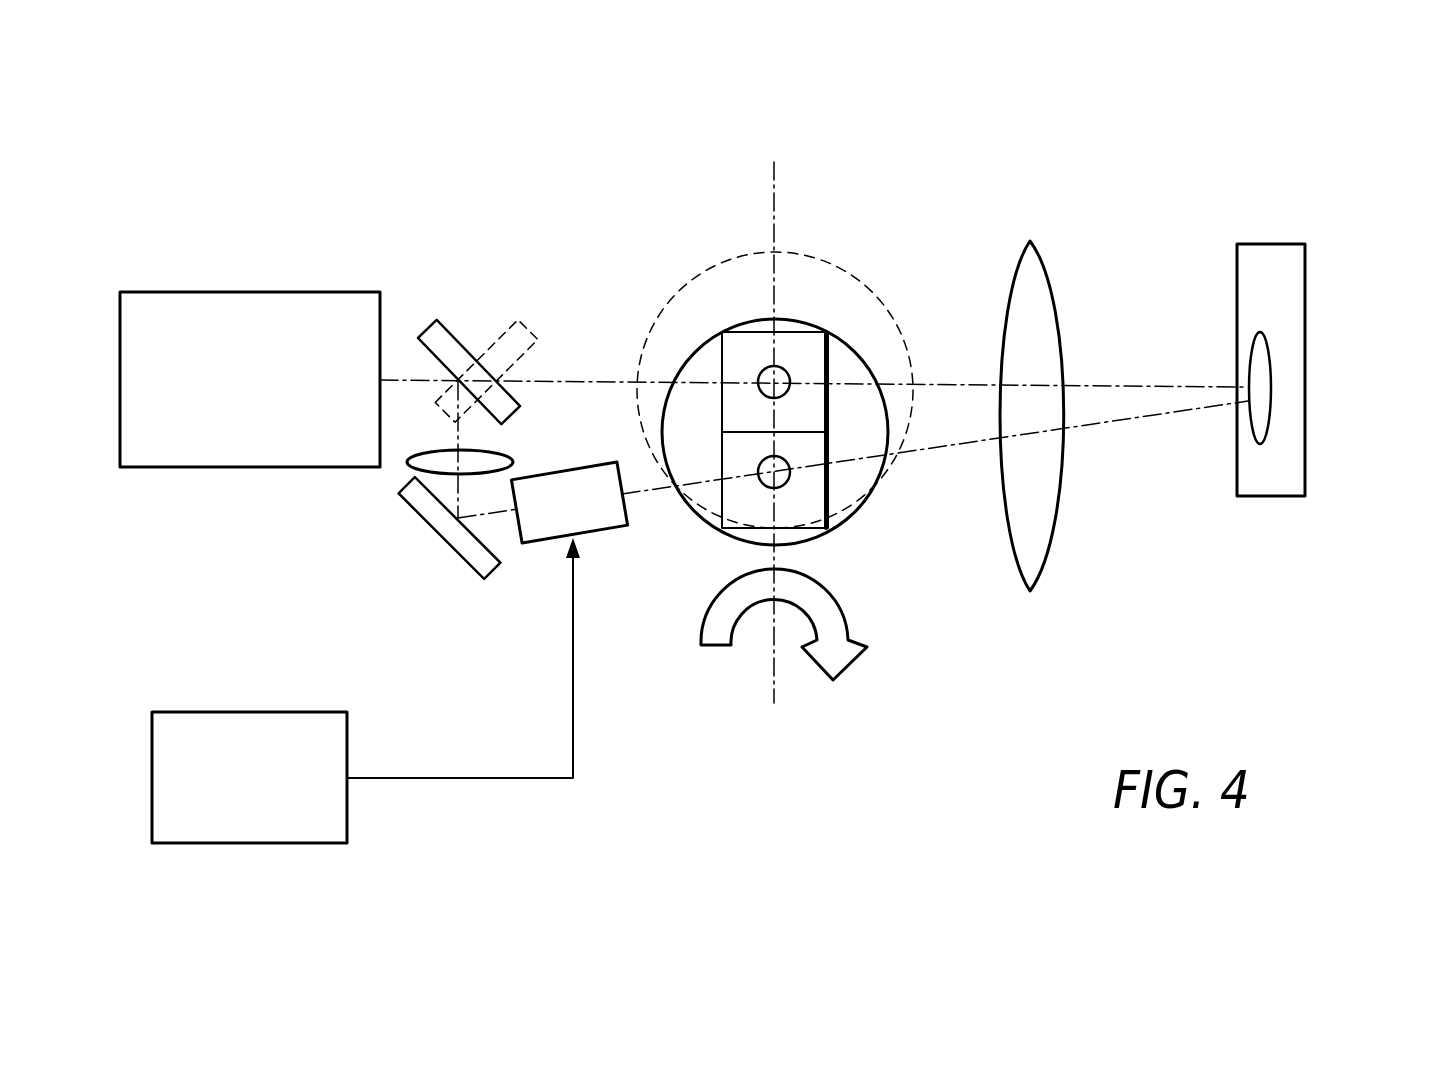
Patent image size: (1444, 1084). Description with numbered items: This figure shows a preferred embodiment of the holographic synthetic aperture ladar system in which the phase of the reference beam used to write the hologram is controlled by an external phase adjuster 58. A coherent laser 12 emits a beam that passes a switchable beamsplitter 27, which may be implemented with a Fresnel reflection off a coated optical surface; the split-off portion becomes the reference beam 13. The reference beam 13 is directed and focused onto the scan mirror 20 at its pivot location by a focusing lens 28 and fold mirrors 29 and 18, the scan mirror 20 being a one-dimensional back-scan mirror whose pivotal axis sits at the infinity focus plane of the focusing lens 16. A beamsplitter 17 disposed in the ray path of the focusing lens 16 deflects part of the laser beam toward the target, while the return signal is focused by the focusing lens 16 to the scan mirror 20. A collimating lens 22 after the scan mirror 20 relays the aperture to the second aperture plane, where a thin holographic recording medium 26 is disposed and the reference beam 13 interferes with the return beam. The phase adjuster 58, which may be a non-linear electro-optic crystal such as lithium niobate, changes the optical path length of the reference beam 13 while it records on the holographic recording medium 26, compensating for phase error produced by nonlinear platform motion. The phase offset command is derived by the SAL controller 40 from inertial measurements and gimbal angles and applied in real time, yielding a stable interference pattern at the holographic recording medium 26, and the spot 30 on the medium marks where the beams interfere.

The coherent laser 12 is at (177, 292).
The reference beam 13 is at (1155, 416).
The focusing lens 16 is at (810, 253).
The beamsplitter 17 is at (807, 350).
The fold mirror 18 is at (815, 497).
The scan mirror 20 is at (700, 343).
The collimating lens 22 is at (1031, 589).
The holographic recording medium 26 is at (1301, 460).
The switchable beamsplitter 27 is at (455, 340).
The focusing lens 28 is at (408, 463).
The fold mirror 29 is at (440, 537).
The laser spot 30 is at (1271, 389).
The SAL controller 40 is at (208, 712).
The phase adjuster 58 is at (610, 530).